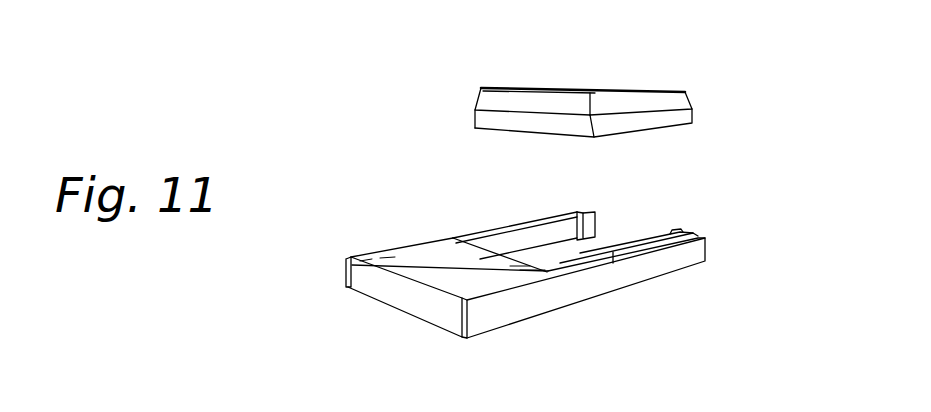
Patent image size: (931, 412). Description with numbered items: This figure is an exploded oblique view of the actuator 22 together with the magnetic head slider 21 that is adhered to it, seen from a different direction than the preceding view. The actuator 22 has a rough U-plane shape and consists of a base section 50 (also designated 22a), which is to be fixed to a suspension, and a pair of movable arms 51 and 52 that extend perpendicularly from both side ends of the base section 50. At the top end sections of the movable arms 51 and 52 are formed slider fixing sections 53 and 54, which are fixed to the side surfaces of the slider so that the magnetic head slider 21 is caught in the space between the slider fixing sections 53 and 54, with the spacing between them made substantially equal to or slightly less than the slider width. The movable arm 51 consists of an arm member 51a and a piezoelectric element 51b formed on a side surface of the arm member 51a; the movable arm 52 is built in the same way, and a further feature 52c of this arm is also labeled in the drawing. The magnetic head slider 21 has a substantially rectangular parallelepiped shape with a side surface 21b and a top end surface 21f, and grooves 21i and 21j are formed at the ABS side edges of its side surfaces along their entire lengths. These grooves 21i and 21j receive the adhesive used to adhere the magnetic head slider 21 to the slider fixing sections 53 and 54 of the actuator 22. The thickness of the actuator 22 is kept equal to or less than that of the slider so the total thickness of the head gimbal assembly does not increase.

The magnetic head slider 21 is at (557, 107).
The groove 21i is at (647, 102).
The groove 21j is at (483, 97).
The side surface 21b is at (650, 130).
The top end surface 21f is at (513, 127).
The end surface 52c is at (475, 118).
The actuator 22 is at (530, 272).
The base section 22a is at (429, 303).
The base section 50 is at (427, 270).
The movable arm 52 is at (490, 227).
The slider fixing section 54 is at (589, 215).
The slider fixing section 53 is at (697, 232).
The movable arm 51 is at (656, 280).
The arm member 51a is at (617, 258).
The piezoelectric element 51b is at (650, 258).